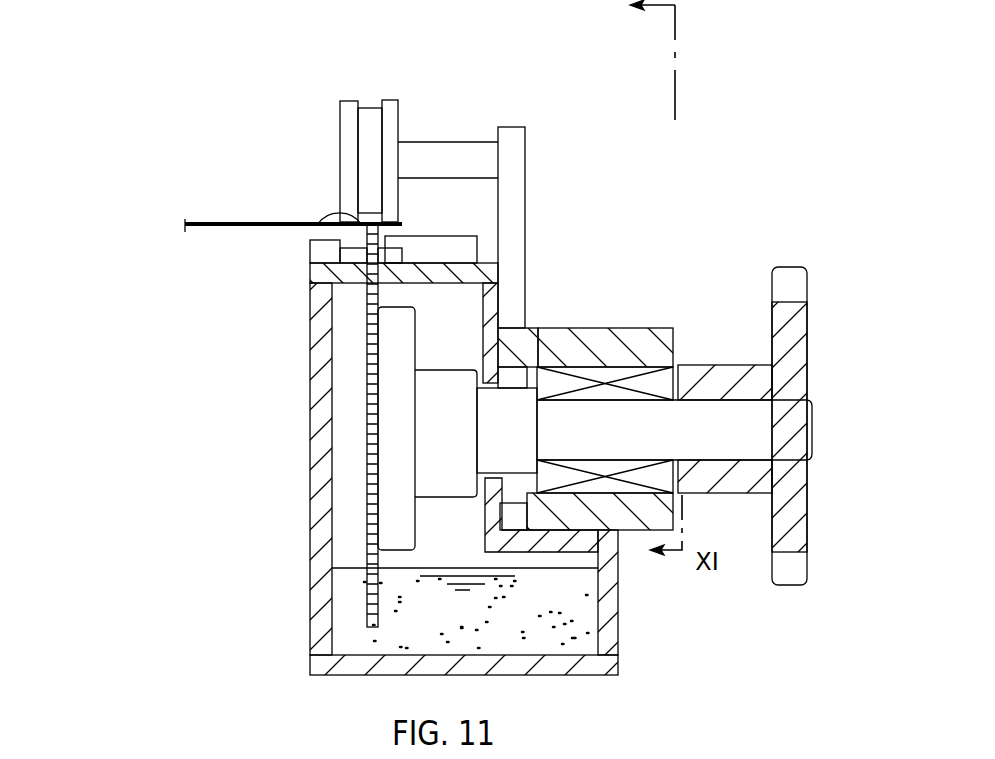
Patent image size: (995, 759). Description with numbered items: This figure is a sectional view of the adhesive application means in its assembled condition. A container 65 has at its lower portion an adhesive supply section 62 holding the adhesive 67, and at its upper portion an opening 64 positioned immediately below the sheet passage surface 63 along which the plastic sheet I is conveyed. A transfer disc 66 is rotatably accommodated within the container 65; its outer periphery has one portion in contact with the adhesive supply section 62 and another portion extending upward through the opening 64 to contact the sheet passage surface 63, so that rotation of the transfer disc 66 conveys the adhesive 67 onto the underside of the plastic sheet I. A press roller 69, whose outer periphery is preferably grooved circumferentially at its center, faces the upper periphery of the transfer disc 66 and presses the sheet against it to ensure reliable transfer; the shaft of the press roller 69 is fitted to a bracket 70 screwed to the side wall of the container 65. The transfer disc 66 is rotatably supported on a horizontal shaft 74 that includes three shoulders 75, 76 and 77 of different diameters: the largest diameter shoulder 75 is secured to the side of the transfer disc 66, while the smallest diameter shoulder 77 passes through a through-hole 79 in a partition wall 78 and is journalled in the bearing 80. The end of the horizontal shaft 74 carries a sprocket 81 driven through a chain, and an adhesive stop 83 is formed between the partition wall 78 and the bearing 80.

The blade plate I is at (232, 222).
The adhesive supply section 62 is at (355, 565).
The sheet passage surface 63 is at (313, 222).
The opening 64 is at (367, 284).
The container 65 is at (312, 432).
The transfer disc 66 is at (368, 363).
The adhesive 67 is at (355, 618).
The press roller 69 is at (396, 100).
The bracket 70 is at (527, 146).
The horizontal shaft 74 is at (815, 430).
The largest diameter shoulder 75 is at (397, 428).
The shoulder 76 is at (446, 433).
The smallest diameter shoulder 77 is at (507, 430).
The partition wall 78 is at (500, 308).
The through-hole 79 is at (515, 352).
The bearing 80 is at (675, 345).
The sprocket 81 is at (807, 283).
The adhesive stop 83 is at (513, 492).